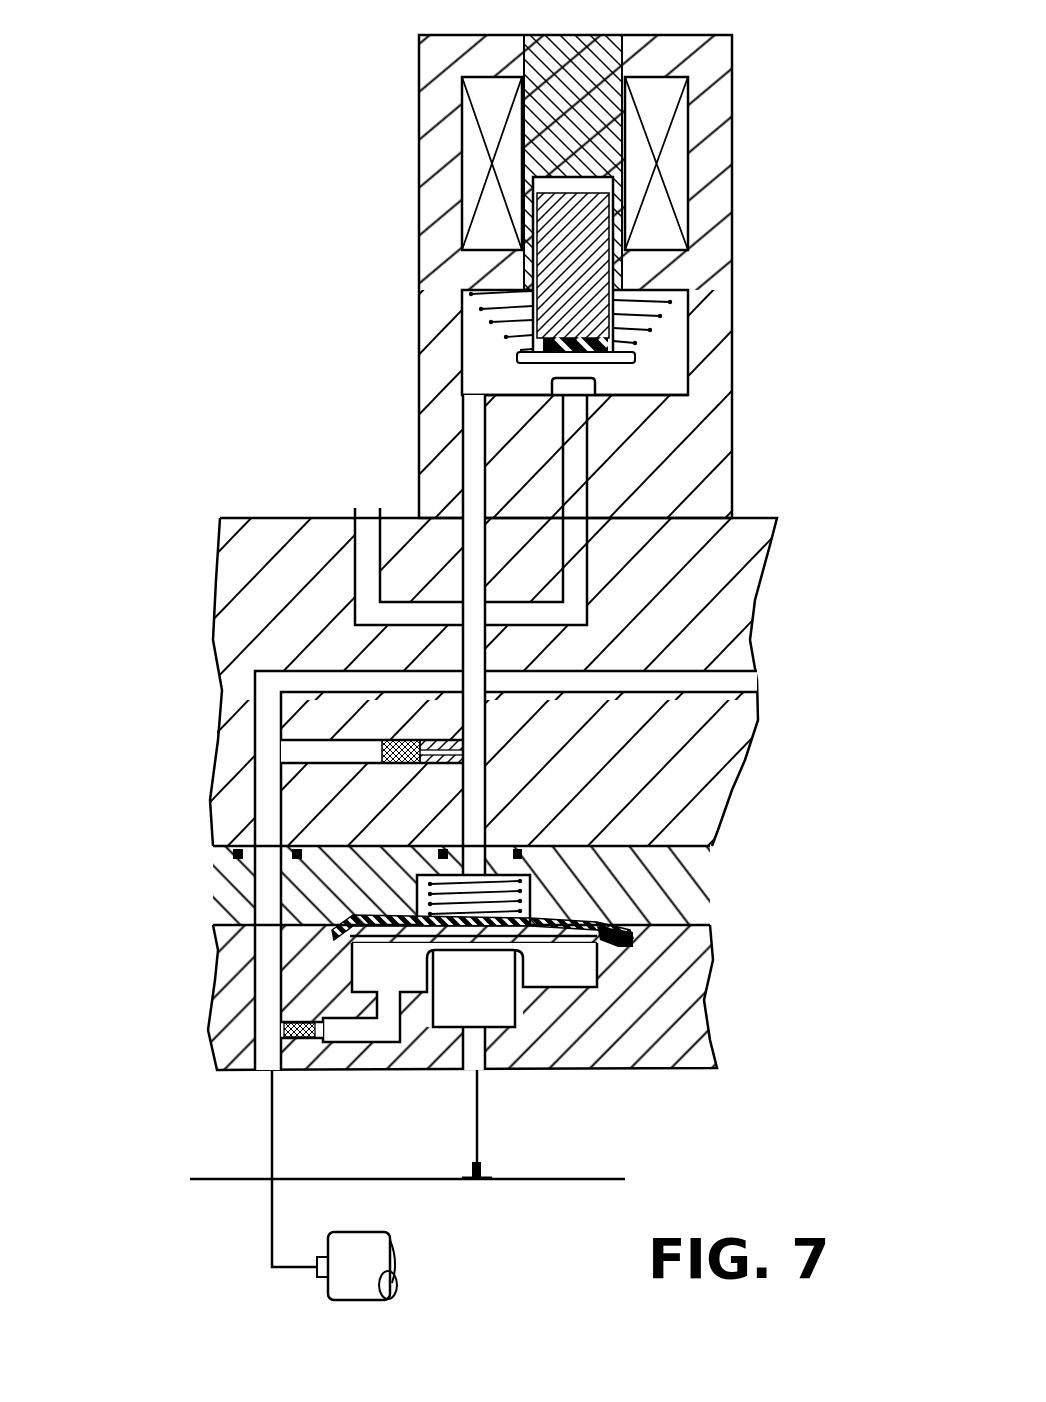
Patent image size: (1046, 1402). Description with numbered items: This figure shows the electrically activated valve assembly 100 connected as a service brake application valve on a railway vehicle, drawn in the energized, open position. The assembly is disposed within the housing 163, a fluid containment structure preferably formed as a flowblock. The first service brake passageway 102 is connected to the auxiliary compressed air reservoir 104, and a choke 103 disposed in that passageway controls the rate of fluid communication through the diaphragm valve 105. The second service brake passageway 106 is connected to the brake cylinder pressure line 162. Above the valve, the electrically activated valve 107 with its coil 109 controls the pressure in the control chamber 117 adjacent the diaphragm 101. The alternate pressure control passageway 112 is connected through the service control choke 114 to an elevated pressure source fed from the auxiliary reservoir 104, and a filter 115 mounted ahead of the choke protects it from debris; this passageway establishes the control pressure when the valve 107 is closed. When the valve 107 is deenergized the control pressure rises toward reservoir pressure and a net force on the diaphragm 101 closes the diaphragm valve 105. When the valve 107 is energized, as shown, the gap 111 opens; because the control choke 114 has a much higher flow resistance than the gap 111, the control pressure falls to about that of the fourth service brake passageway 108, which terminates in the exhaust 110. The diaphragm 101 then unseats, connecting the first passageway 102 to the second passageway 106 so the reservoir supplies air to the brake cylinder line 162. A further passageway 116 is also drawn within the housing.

The electrically activated valve assembly 100 is at (257, 477).
The diaphragm 101 is at (590, 915).
The first service brake passageway 102 is at (380, 1010).
The choke 103 is at (282, 1032).
The auxiliary compressed air reservoir 104 is at (380, 1245).
The diaphragm valve 105 is at (203, 898).
The second service brake passageway 106 is at (481, 1057).
The electrically activated valve 107 is at (400, 337).
The fourth service brake passageway 108 is at (365, 590).
The coil 109 is at (662, 112).
The exhaust 110 is at (367, 508).
The gap 111 is at (585, 368).
The alternate pressure control passageway 112 is at (307, 753).
The service control choke 114 is at (440, 765).
The filter 115 is at (380, 745).
The passage 116 is at (300, 682).
The control chamber 117 is at (530, 880).
The brake cylinder pressure line 162 is at (567, 1177).
The housing 163 is at (752, 522).